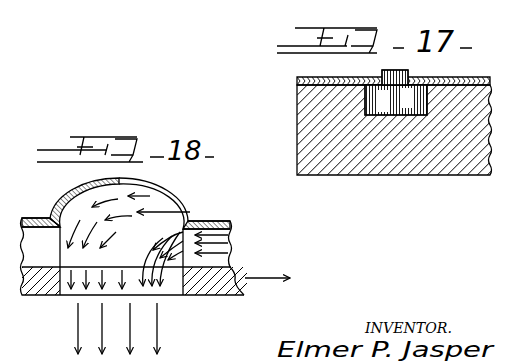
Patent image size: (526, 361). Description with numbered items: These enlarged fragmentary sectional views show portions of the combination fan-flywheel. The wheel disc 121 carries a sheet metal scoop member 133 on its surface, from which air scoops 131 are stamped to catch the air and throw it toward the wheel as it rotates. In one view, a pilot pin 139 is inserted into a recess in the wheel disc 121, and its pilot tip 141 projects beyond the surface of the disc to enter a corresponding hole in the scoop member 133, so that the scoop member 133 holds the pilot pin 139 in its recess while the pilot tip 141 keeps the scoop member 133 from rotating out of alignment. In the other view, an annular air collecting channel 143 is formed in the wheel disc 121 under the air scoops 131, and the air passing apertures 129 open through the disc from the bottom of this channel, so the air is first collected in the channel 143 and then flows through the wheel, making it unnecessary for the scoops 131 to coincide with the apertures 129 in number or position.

In FIG. 17, the wheel disc 121 is at (397, 163).
In FIG. 18, the wheel disc 121 is at (212, 290).
In FIG. 18, the air passing apertures 129 is at (67, 296).
In FIG. 18, the air scoops 131 is at (86, 193).
In FIG. 17, the scoop member 133 is at (300, 83).
In FIG. 18, the scoop member 133 is at (47, 221).
In FIG. 17, the pilot pin 139 is at (392, 110).
In FIG. 17, the pilot tip 141 is at (408, 75).
In FIG. 18, the annular air collecting channel 143 is at (232, 251).